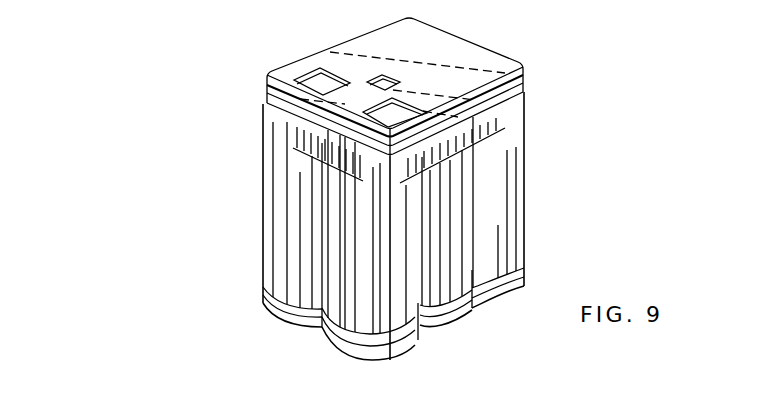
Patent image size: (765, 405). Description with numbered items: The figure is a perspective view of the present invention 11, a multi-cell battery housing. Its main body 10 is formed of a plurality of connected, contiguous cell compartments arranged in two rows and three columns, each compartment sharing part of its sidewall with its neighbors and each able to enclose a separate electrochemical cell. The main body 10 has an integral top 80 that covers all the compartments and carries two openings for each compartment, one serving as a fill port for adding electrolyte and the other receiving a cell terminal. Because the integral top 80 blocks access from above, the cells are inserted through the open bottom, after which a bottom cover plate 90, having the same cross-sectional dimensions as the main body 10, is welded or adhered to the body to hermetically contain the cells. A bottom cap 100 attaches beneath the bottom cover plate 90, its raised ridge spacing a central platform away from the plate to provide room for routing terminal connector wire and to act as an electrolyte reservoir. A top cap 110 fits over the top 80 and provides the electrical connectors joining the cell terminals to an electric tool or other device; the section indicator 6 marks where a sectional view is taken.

The main body 10 is at (383, 228).
The present invention 11 is at (180, 113).
The integral top 80 is at (263, 107).
The bottom cover plate 90 is at (453, 316).
The bottom cap 100 is at (413, 333).
The top cap 110 is at (267, 87).
The section line 6 is at (563, 233).